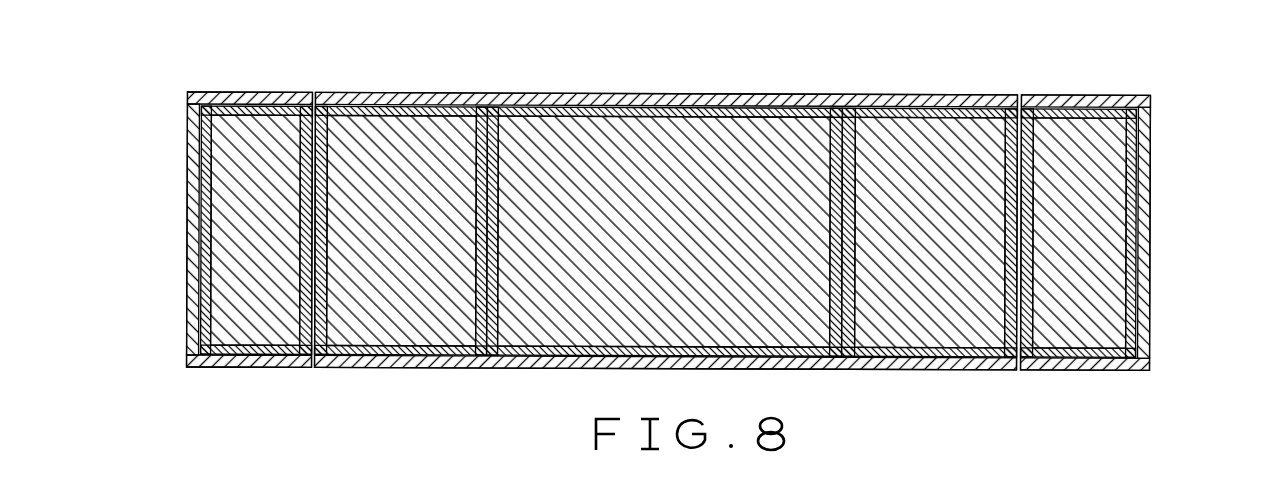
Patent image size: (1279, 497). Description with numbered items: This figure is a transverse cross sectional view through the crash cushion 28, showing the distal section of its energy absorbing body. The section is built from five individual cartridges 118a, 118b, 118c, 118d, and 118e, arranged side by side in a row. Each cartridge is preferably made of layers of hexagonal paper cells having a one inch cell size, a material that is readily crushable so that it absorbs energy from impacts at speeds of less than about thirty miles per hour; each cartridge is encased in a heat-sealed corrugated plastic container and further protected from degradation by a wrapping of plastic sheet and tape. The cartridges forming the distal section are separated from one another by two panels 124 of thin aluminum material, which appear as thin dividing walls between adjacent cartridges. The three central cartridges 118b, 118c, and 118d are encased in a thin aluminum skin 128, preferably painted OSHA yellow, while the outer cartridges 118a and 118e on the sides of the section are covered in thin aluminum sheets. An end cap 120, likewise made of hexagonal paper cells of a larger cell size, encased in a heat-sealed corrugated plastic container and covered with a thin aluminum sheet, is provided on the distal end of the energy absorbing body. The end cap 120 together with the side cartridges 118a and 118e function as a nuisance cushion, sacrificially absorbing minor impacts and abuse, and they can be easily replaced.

The crash cushion 28 is at (383, 70).
The cartridge 118a is at (240, 135).
The cartridge 118b is at (428, 125).
The cartridge 118c is at (620, 157).
The cartridge 118d is at (922, 165).
The cartridge 118e is at (1090, 152).
The end cap 120 is at (705, 367).
The panel 124 is at (282, 110).
The aluminum skin 128 is at (237, 367).